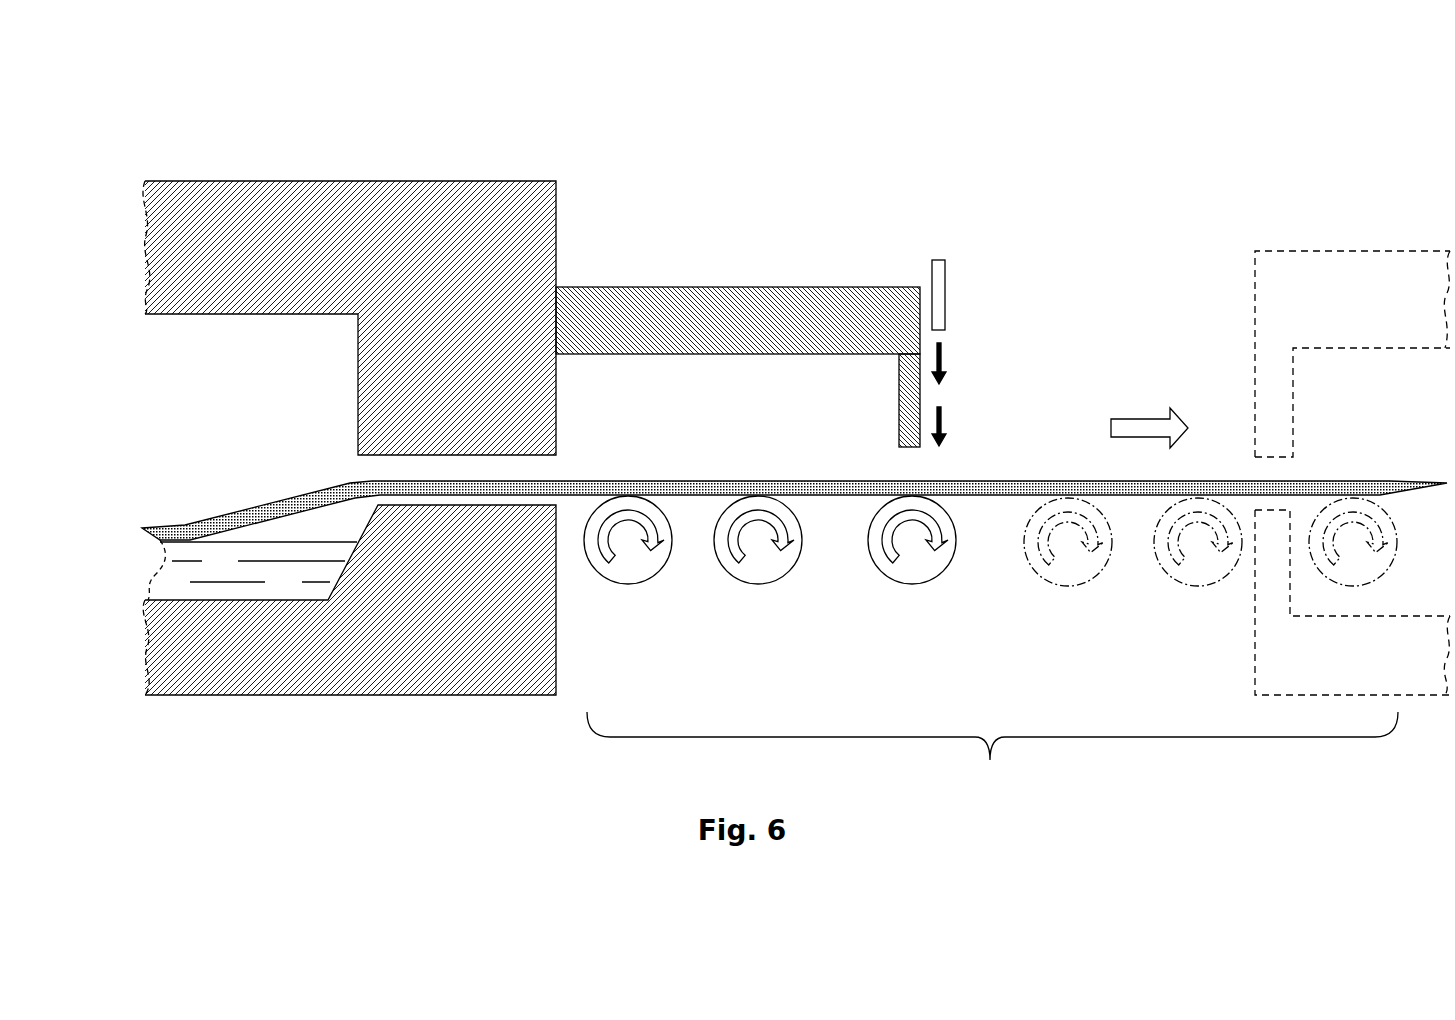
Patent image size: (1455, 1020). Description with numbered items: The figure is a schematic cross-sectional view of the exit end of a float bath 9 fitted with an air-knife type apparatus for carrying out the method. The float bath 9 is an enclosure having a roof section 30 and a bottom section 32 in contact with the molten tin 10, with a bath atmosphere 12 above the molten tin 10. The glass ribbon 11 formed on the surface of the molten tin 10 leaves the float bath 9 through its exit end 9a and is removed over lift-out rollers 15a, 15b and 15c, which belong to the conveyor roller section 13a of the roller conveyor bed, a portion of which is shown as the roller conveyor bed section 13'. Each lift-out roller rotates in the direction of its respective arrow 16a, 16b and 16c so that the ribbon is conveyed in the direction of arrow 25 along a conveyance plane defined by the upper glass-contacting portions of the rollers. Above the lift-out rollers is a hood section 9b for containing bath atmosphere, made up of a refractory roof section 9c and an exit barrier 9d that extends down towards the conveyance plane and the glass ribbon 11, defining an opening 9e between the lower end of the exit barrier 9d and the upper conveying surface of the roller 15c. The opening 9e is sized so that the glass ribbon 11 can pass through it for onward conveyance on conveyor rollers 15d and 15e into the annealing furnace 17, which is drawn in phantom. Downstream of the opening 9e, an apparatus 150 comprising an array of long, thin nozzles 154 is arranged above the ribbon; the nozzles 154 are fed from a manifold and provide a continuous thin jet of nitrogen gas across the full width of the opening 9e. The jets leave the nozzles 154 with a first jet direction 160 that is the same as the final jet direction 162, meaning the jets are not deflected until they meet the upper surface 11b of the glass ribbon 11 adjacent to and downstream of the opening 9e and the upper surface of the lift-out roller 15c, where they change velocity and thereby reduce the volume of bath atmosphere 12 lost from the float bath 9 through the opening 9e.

The float bath 9 is at (262, 126).
The exit end 9a is at (756, 108).
The hood section 9b is at (806, 276).
The refractory roof section 9c is at (672, 320).
The exit barrier 9d is at (898, 425).
The opening 9e is at (934, 462).
The molten tin 10 is at (163, 585).
The glass ribbon 11 is at (770, 490).
The upper surface of the ribbon of glass 11b is at (876, 470).
The bath atmosphere 12 is at (180, 414).
The roller conveyor bed section 13' is at (982, 647).
The conveyor roller section 13a is at (860, 642).
The lift-out conveyor roller 15a is at (619, 582).
The lift-out conveyor roller 15b is at (745, 582).
The lift-out conveyor roller 15c is at (913, 579).
The conveyor roller 15d is at (1085, 567).
The conveyor roller 15e is at (1213, 565).
The arrow 16a is at (603, 551).
The arrow 16b is at (727, 533).
The arrow 16c is at (885, 547).
The annealing furnace 17 is at (1360, 198).
The arrow 25 is at (1148, 430).
The roof section 30 is at (403, 200).
The bottom section 32 is at (403, 660).
The apparatus 150 is at (978, 266).
The nozzles 154 is at (938, 262).
The first jet direction 160 is at (940, 358).
The final jet direction 162 is at (940, 420).